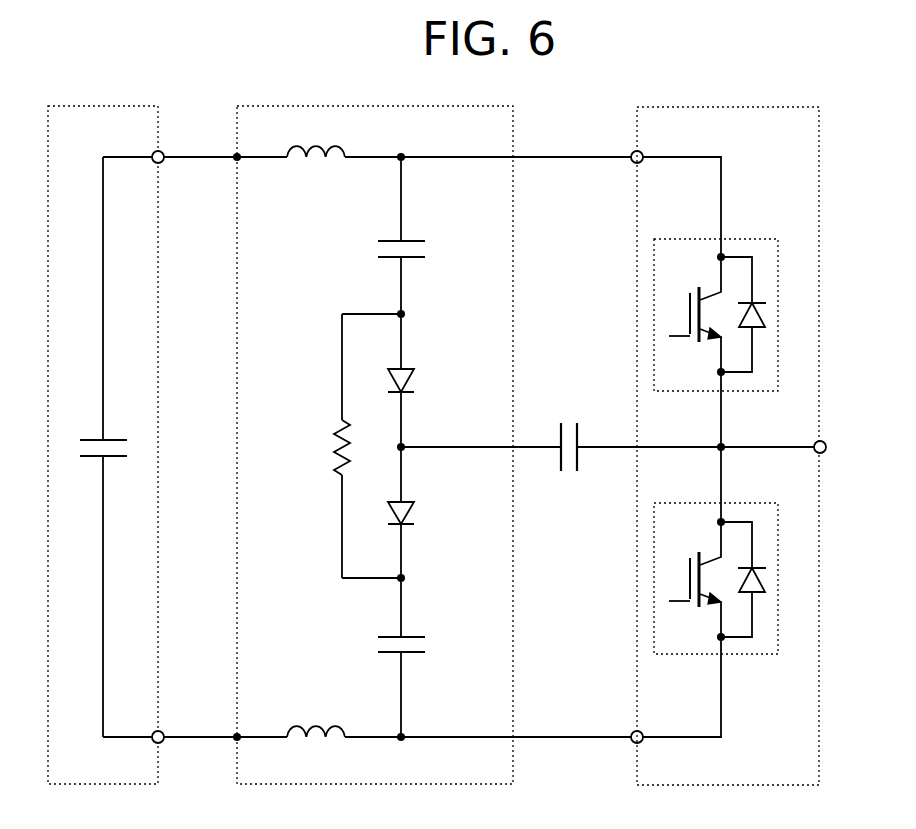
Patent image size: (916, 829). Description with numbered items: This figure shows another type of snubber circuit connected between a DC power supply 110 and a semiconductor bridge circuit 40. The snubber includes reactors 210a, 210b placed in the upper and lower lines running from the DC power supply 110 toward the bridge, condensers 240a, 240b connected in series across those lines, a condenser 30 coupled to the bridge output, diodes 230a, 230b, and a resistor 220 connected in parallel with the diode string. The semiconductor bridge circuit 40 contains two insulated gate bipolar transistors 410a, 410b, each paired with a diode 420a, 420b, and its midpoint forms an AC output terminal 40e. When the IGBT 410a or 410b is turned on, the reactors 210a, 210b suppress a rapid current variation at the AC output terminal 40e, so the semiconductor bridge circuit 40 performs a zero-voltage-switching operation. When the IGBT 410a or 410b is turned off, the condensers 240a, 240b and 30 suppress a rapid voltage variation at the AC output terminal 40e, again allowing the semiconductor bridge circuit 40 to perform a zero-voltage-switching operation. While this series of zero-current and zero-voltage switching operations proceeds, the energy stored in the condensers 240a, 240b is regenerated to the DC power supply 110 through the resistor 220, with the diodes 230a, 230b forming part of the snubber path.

The DC power supply 110 is at (117, 437).
The reactor 210a is at (317, 166).
The reactor 210b is at (322, 727).
The resistor 220 is at (332, 445).
The diode 230a is at (407, 370).
The diode 230b is at (417, 512).
The condenser 240a is at (417, 238).
The condenser 240b is at (417, 634).
The condenser 30 is at (567, 430).
The semiconductor bridge circuit 40 is at (727, 107).
The AC output terminal 40e is at (822, 440).
The insulated gate bipolar transistor (IGBT) 410a is at (695, 337).
The insulated gate bipolar transistor (IGBT) 410b is at (695, 602).
The diode 420a is at (766, 312).
The diode 420b is at (766, 578).